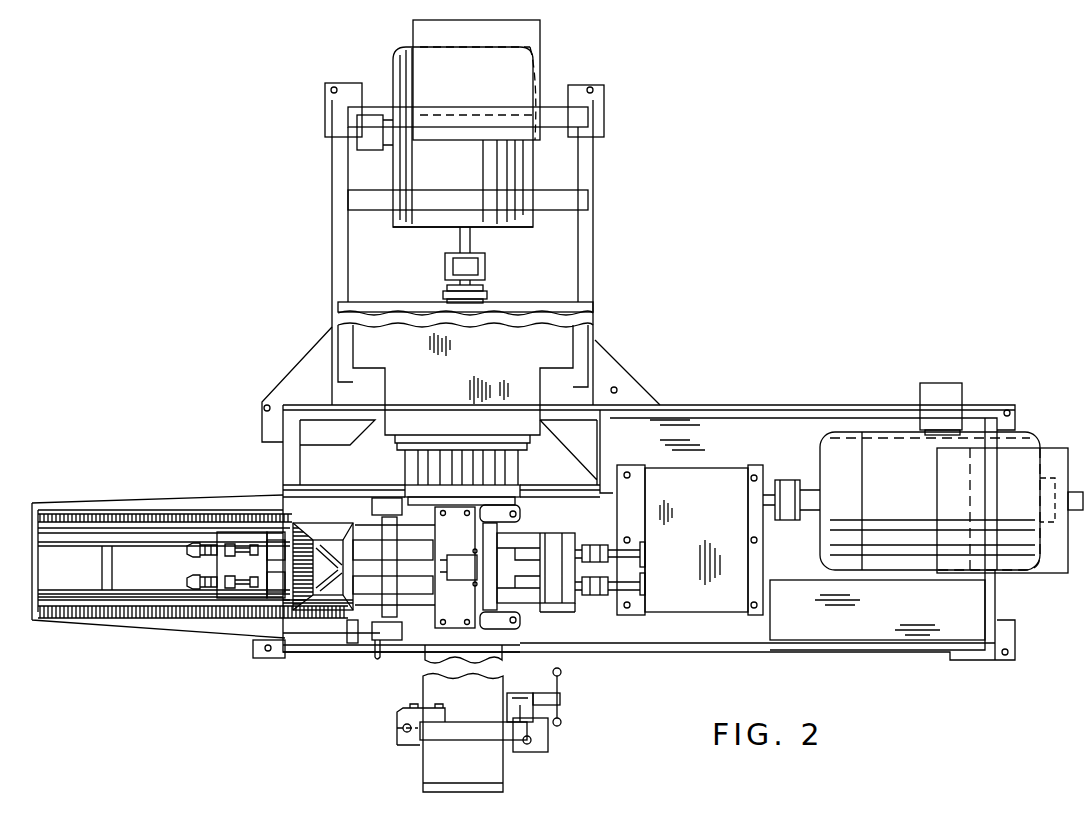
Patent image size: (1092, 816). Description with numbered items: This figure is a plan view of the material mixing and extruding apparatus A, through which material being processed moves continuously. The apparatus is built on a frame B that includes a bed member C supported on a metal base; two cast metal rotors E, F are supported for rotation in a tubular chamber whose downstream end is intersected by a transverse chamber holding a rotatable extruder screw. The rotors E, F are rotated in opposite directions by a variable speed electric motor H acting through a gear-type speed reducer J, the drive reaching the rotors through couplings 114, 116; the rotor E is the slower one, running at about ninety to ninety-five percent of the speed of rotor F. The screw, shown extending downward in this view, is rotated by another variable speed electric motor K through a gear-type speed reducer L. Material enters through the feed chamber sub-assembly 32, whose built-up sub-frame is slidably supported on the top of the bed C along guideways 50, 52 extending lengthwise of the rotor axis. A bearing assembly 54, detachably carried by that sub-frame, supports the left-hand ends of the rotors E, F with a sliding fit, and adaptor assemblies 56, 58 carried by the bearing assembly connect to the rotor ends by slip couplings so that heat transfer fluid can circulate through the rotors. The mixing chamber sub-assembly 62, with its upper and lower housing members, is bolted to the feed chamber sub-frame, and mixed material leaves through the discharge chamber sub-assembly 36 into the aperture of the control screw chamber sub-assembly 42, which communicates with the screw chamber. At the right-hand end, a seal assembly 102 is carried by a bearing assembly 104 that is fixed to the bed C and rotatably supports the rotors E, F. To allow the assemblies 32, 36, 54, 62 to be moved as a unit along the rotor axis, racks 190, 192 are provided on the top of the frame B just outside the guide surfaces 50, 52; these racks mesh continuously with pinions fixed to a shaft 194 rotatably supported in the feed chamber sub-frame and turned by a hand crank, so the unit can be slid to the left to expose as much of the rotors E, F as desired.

The material mixing and extruding apparatus A is at (641, 365).
The built-up frame B is at (766, 630).
The bed member C is at (194, 632).
The rotor E is at (322, 580).
The rotor F is at (322, 552).
The variable speed electric motor H is at (883, 439).
The gear-type speed reducer J is at (733, 466).
The variable speed electric motor K is at (511, 228).
The gear-type speed reducer L is at (344, 339).
The feed chamber sub-assembly 32 is at (287, 568).
The discharge chamber sub-assembly 36 is at (457, 598).
The control screw chamber sub-assembly 42 is at (417, 695).
The guideway 50 is at (88, 600).
The guideway 52 is at (50, 535).
The bearing assembly 54 is at (284, 612).
The adaptor assembly 56 is at (186, 582).
The adaptor assembly 58 is at (186, 550).
The mixing chamber sub-assembly 62 is at (422, 555).
The seal assembly 102 is at (531, 537).
The bearing assembly 104 is at (552, 598).
The coupling 114 is at (606, 600).
The coupling 116 is at (596, 545).
The rack 190 is at (138, 616).
The rack 192 is at (128, 512).
The shaft 194 is at (346, 623).